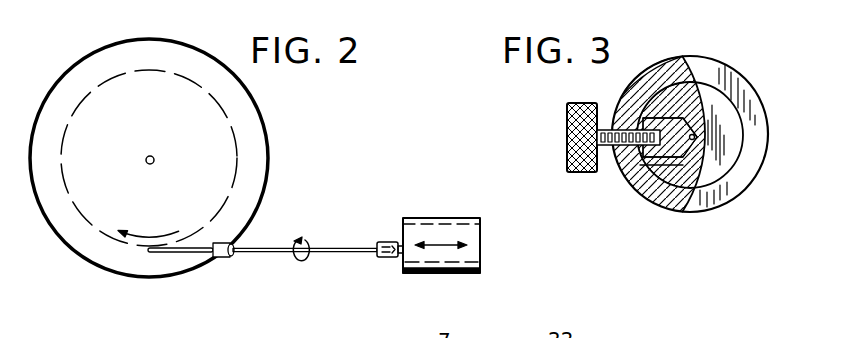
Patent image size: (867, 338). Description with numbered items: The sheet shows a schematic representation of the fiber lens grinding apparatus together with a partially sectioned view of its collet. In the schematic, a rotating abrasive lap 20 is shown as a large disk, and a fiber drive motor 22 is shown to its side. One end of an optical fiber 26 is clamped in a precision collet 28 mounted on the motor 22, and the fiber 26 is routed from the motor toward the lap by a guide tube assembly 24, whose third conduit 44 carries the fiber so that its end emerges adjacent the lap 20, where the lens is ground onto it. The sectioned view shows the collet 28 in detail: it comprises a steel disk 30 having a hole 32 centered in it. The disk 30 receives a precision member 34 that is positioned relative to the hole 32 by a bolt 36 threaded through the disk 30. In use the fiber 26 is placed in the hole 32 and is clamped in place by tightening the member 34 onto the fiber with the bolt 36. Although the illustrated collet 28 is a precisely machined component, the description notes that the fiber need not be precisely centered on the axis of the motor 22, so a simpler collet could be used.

In FIG. 2, the rotating abrasive lap 20 is at (268, 152).
In FIG. 2, the fiber drive motor 22 is at (441, 218).
In FIG. 2, the guide tube assembly 24 is at (228, 270).
In FIG. 2, the optical fiber 26 is at (332, 253).
In FIG. 2, the precision collet 28 is at (385, 242).
In FIG. 3, the precision collet 28 is at (649, 53).
In FIG. 3, the steel disk 30 is at (725, 73).
In FIG. 3, the hole 32 is at (695, 135).
In FIG. 3, the precision member 34 is at (657, 194).
In FIG. 3, the bolt 36 is at (604, 146).
In FIG. 2, the third conduit 44 is at (158, 253).